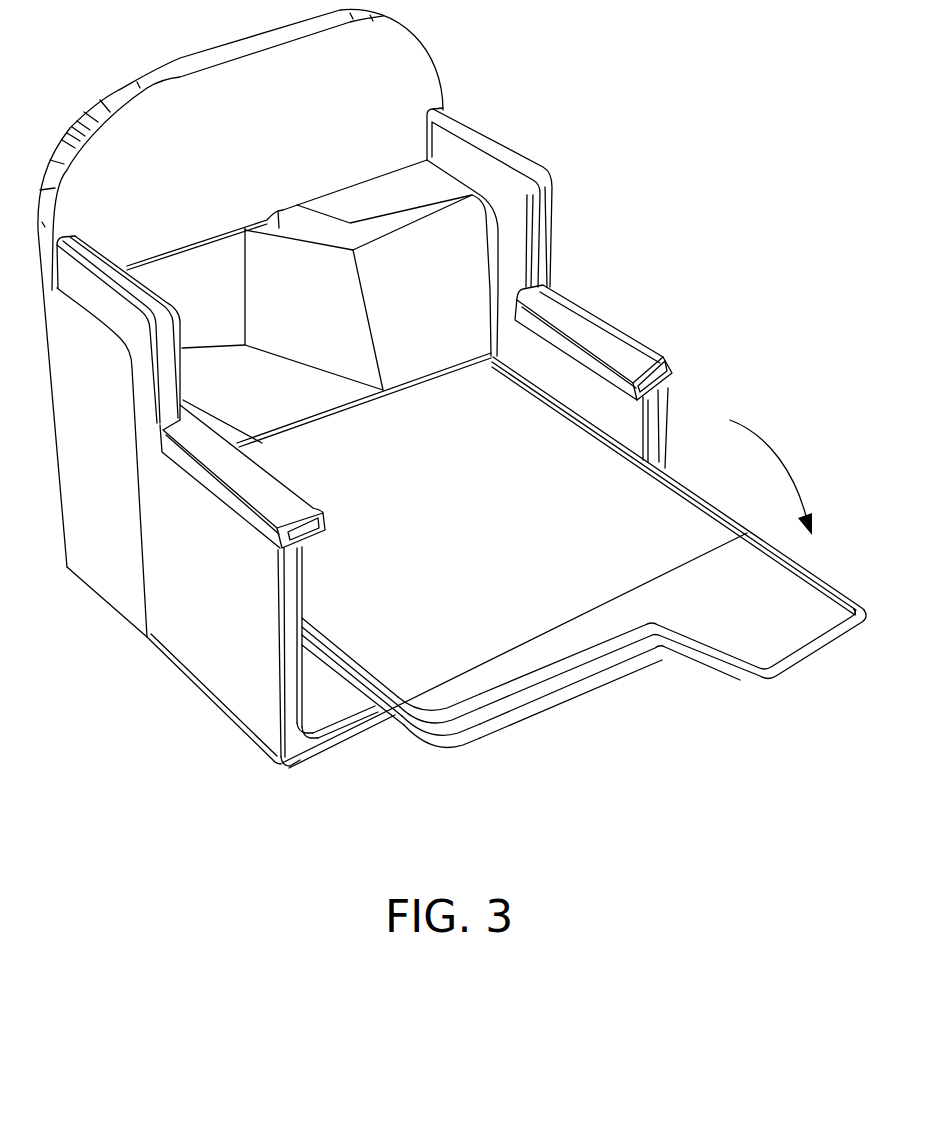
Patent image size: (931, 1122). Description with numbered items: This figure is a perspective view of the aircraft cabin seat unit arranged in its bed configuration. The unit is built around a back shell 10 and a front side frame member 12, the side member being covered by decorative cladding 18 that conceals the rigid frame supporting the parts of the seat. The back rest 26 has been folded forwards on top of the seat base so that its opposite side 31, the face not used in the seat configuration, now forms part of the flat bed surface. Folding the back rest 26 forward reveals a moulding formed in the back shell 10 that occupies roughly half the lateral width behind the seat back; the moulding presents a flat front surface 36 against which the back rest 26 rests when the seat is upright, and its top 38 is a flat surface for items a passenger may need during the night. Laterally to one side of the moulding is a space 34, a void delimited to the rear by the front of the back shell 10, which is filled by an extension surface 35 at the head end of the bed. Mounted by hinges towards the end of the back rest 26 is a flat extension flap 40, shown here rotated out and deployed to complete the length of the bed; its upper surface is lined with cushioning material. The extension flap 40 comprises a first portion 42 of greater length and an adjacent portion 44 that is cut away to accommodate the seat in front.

The back shell 10 is at (68, 140).
The front side frame member 12 is at (178, 654).
The decorative cladding 18 is at (150, 462).
The back rest 26 is at (387, 703).
The opposite side 31 is at (538, 437).
The space 34 is at (176, 292).
The extension surface 35 is at (215, 390).
The flat front surface 36 is at (463, 285).
The top 38 is at (443, 183).
The extension flap 40 is at (717, 652).
The first portion 42 is at (831, 610).
The adjacent portion 44 is at (460, 712).